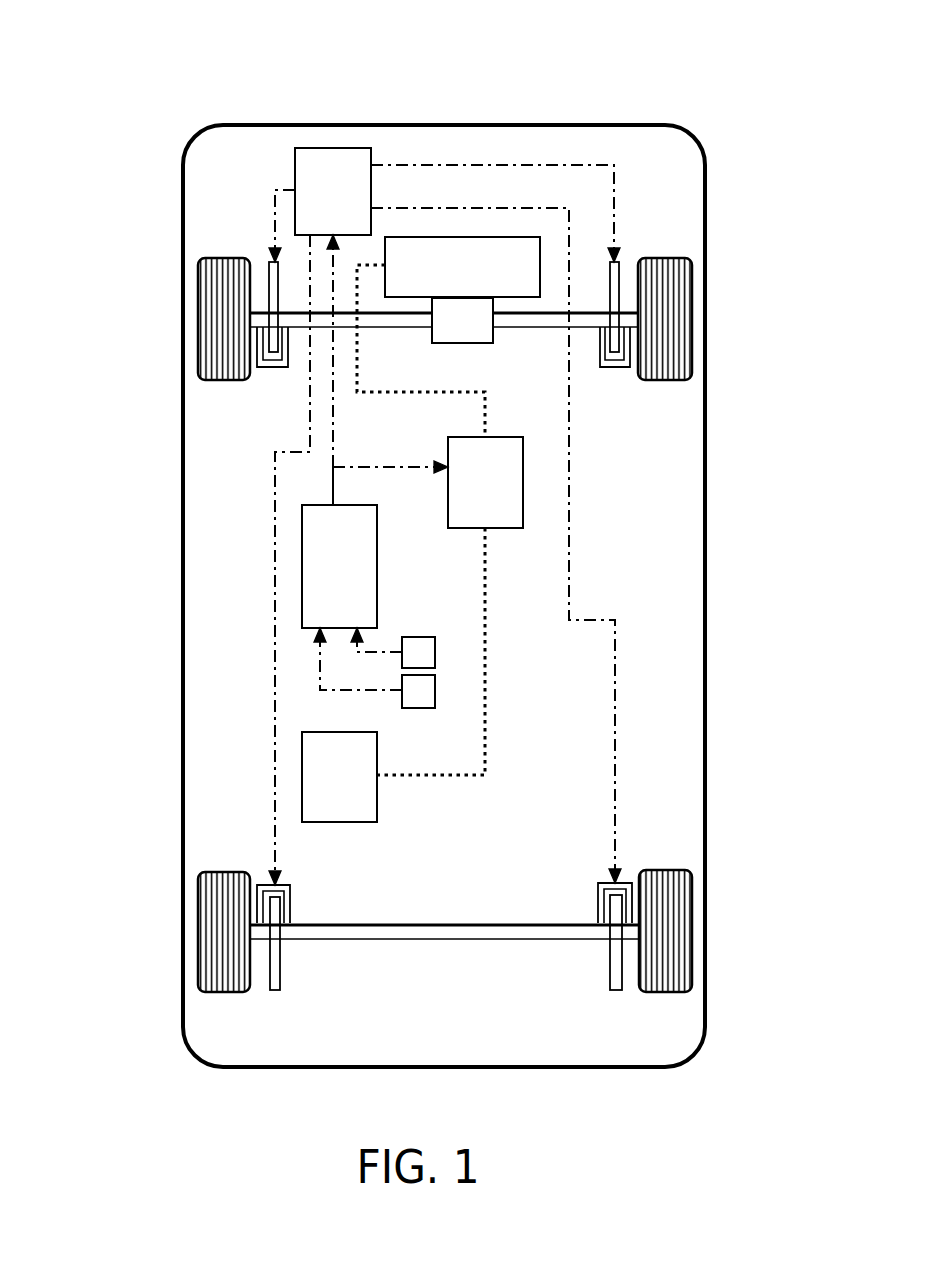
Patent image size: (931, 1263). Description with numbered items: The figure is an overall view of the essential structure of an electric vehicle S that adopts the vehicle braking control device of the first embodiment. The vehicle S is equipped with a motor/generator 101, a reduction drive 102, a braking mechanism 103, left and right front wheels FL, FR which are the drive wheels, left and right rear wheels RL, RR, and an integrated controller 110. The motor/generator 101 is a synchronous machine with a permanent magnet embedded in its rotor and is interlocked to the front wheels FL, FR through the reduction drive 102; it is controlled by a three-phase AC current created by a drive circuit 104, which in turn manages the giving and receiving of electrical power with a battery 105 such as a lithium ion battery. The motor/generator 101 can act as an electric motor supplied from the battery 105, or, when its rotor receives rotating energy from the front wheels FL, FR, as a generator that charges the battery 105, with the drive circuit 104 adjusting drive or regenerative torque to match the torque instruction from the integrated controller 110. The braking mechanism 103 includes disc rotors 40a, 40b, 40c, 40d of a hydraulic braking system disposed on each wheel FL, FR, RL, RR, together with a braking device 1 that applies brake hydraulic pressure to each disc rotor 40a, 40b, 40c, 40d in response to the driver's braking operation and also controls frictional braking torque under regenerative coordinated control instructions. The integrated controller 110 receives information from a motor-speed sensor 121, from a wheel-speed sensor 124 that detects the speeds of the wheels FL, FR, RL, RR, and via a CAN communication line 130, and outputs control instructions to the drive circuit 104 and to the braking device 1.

The electric vehicle S is at (200, 127).
The braking device 1 is at (333, 191).
The motor/generator 101 is at (462, 267).
The reduction drive 102 is at (462, 320).
The braking mechanism 103 is at (452, 157).
The drive circuit 104 is at (485, 482).
The battery 105 is at (339, 777).
The integrated controller 110 is at (339, 566).
The motor-speed sensor 121 is at (415, 637).
The wheel-speed sensor 124 is at (415, 708).
The CAN communication line 130 is at (335, 430).
The disc rotor 40a is at (270, 368).
The disc rotor 40b is at (620, 368).
The disc rotor 40c is at (272, 990).
The disc rotor 40d is at (615, 990).
The left front wheel FL is at (198, 316).
The right front wheel FR is at (692, 314).
The left rear wheel RL is at (198, 936).
The right rear wheel RR is at (692, 934).